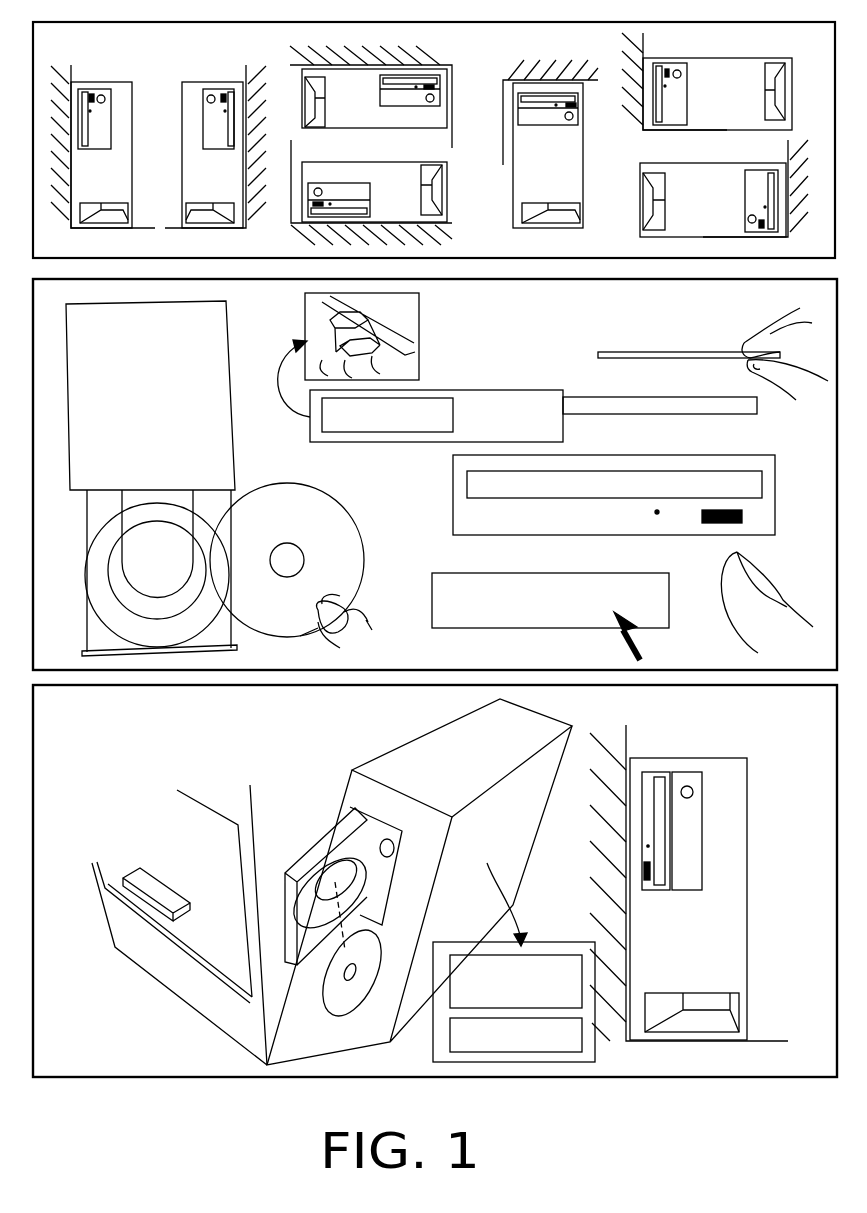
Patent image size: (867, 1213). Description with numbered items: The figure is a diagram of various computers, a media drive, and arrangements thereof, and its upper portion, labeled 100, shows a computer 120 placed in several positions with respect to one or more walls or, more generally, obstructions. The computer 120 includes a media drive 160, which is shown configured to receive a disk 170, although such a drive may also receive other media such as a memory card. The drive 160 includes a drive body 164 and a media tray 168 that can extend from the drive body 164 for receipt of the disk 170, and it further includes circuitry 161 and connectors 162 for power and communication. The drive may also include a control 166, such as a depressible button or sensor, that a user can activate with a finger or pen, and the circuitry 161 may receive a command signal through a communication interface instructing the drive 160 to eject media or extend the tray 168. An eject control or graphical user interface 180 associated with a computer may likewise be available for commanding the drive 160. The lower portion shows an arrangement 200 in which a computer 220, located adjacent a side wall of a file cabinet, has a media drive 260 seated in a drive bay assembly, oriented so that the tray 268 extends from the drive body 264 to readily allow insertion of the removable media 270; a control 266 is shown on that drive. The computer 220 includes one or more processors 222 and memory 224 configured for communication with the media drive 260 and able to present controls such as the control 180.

The computing environment 100 is at (434, 140).
The computer 120 is at (132, 82).
The media drive 160 is at (88, 92).
The circuitry 161 is at (420, 391).
The connectors 162 is at (419, 323).
The drive body 164 is at (315, 412).
The control 166 is at (743, 514).
The media tray 168 is at (422, 563).
The disk 170 is at (610, 340).
The eject control or graphical user interface 180 is at (458, 564).
The arrangement 200 is at (435, 881).
The computer 220 is at (416, 741).
The processors 222 is at (516, 981).
The memory 224 is at (516, 1035).
The media drive 260 is at (374, 798).
The drive body 264 is at (358, 823).
The eject button 266 is at (650, 880).
The tray 268 is at (325, 853).
The removable media 270 is at (330, 1010).